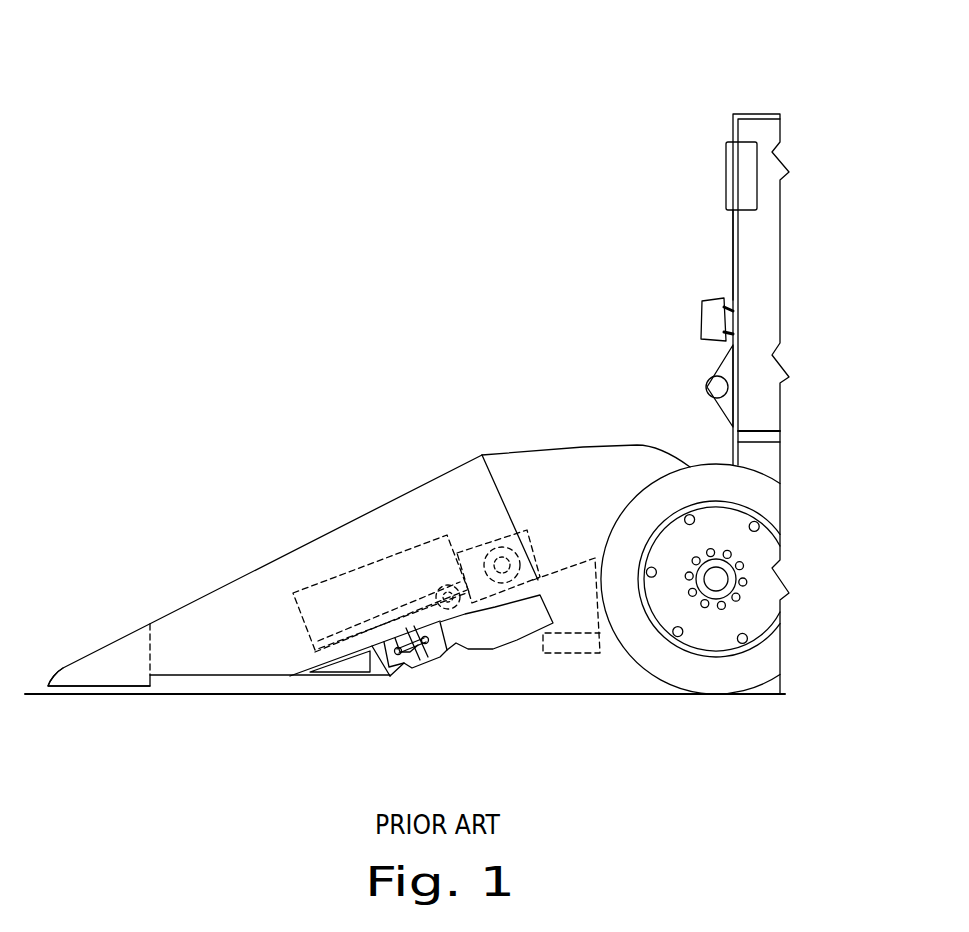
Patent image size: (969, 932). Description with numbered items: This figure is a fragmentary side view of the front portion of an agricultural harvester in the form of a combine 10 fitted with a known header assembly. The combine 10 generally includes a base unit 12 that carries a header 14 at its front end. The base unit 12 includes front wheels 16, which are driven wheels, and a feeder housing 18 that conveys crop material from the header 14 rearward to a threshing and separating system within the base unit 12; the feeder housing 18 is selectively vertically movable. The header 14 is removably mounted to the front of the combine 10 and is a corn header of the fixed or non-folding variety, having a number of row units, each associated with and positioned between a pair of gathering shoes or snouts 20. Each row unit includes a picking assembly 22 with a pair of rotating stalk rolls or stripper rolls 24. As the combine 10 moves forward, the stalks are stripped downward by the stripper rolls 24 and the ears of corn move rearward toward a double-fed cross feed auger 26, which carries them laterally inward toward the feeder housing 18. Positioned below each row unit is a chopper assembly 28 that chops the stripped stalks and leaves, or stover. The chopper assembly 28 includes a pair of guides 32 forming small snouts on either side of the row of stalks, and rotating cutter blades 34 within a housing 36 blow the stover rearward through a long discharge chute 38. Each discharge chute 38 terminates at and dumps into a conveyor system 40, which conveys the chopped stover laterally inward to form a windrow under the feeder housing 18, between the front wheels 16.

The combine 10 is at (695, 129).
The base unit 12 is at (720, 254).
The header 14 is at (326, 501).
The front wheels 16 is at (750, 612).
The feeder housing 18 is at (583, 447).
The snouts 20 is at (89, 641).
The picking assembly 22 is at (311, 587).
The stripper rolls 24 is at (307, 655).
The cross feed auger 26 is at (492, 548).
The chopper assembly 28 is at (431, 682).
The guides 32 is at (330, 678).
The cutter blades 34 is at (402, 668).
The housing 36 is at (441, 652).
The discharge chute 38 is at (508, 635).
The conveyor system 40 is at (577, 665).